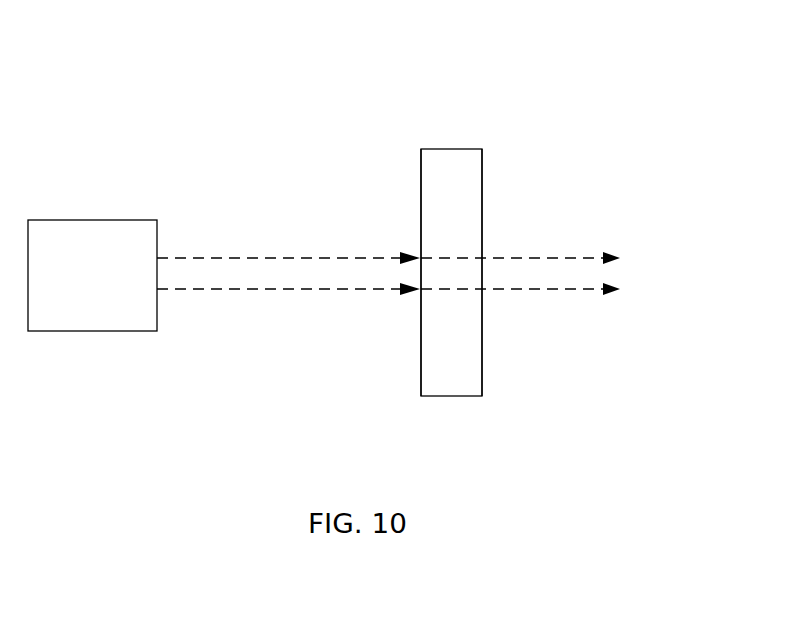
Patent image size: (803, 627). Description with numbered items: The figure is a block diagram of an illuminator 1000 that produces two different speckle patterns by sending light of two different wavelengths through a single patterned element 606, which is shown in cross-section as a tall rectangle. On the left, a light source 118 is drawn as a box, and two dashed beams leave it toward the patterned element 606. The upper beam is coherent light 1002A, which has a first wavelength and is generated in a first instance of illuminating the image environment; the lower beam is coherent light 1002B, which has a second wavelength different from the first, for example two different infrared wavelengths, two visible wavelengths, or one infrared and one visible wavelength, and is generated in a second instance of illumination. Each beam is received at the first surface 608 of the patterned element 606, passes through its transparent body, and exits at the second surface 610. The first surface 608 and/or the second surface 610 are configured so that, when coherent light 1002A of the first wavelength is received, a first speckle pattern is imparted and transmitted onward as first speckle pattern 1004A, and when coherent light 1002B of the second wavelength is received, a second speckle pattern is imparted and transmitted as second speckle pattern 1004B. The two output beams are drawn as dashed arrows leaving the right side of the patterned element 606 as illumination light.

The illuminator 1000 is at (88, 58).
The light source 118 is at (92, 275).
The coherent light 1002A is at (197, 255).
The coherent light 1002B is at (197, 291).
The patterned element 606 is at (447, 149).
The first surface 608 is at (421, 172).
The second surface 610 is at (482, 167).
The first speckle pattern 1004A is at (560, 257).
The second speckle pattern 1004B is at (570, 292).